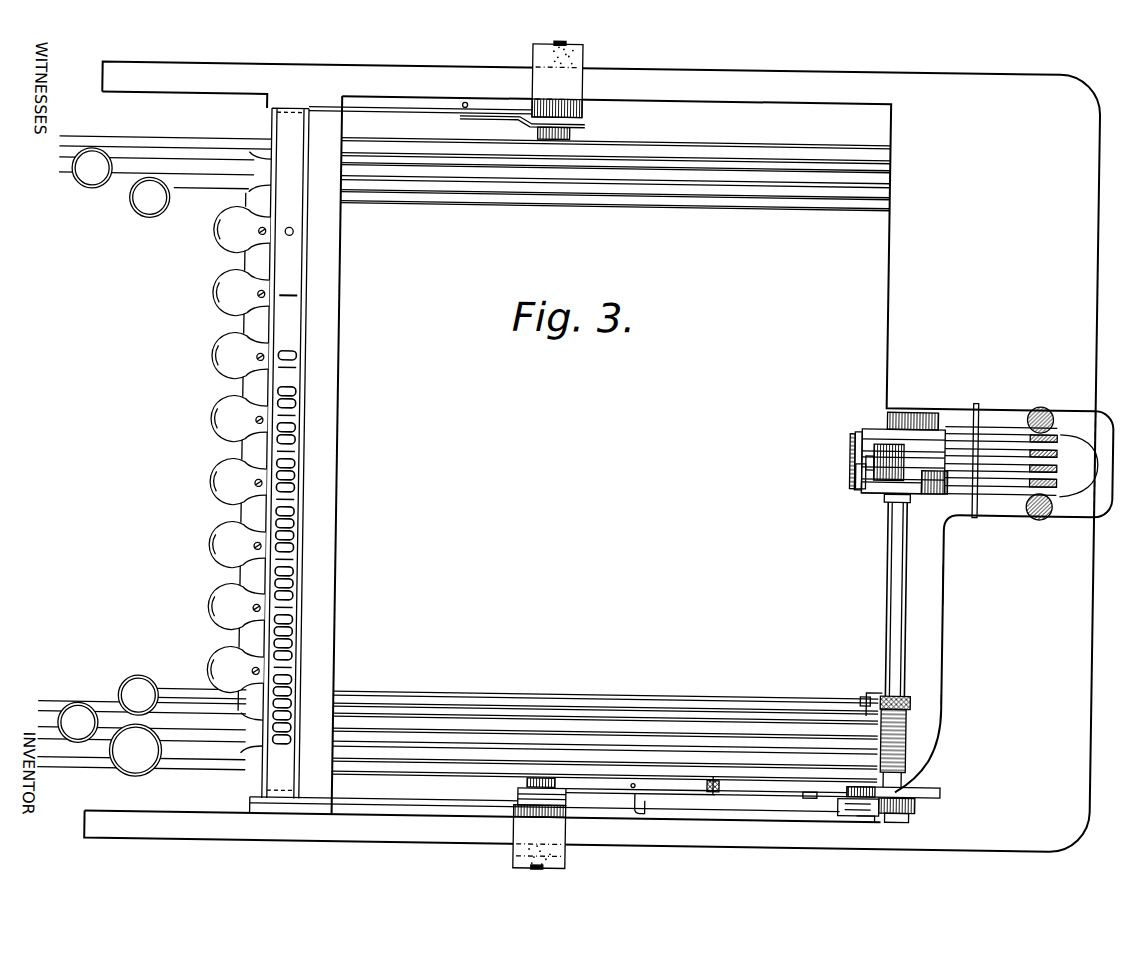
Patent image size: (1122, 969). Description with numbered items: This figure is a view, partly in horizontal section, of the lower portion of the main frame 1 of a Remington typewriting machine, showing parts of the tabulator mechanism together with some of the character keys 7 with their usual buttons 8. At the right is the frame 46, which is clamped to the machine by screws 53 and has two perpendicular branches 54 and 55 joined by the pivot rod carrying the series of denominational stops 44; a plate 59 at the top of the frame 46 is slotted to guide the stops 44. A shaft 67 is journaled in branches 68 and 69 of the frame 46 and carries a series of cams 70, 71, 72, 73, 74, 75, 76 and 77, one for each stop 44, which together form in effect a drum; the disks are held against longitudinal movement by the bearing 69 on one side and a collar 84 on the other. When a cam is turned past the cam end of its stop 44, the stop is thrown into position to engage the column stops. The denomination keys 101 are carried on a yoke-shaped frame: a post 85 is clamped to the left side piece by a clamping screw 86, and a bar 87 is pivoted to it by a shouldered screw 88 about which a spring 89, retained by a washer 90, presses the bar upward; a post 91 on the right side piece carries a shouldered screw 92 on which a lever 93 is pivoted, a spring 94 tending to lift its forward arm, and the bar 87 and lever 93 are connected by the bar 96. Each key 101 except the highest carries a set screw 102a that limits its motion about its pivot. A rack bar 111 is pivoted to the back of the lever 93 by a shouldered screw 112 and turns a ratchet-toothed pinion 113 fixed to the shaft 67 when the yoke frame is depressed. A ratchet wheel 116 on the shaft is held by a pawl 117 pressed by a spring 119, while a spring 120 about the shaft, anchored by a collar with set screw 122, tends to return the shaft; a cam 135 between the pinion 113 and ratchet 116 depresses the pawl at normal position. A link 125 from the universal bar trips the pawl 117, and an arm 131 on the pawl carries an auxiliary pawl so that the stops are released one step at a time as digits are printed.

The main frame 1 is at (601, 456).
The character keys 7 is at (453, 207).
The buttons 8 is at (148, 224).
The denominational stops 44 is at (1052, 480).
The frame 46 is at (945, 578).
The screws 53 is at (866, 694).
The perpendicular branch 54 is at (1040, 513).
The perpendicular branch 55 is at (1041, 410).
The plate 59 is at (976, 404).
The shaft 67 is at (894, 612).
The branch 68 is at (937, 695).
The branch 69 is at (913, 412).
The cam 70 is at (855, 430).
The cam 71 is at (850, 438).
The cam 72 is at (851, 455).
The cam 73 is at (880, 442).
The cam 74 is at (851, 455).
The cam 75 is at (922, 490).
The cam 76 is at (866, 486).
The cam 77 is at (856, 480).
The collar 84 is at (888, 498).
The post 85 is at (577, 90).
The clamping screw 86 is at (548, 45).
The bar 87 is at (410, 111).
The shouldered screw 88 is at (565, 135).
The spring 89 is at (462, 112).
The washer 90 is at (545, 128).
The post 91 is at (518, 808).
The shouldered screw 92 is at (531, 784).
The lever 93 is at (378, 815).
The spring 94 is at (634, 796).
The bar 96 is at (307, 323).
The denomination keys 101 is at (247, 368).
The set screw 102a is at (258, 240).
The rack bar 111 is at (866, 808).
The shouldered screw 112 is at (851, 815).
The pinion 113 is at (916, 810).
The ratchet wheel 116 is at (937, 777).
The pawl 117 is at (781, 797).
The spring 119 is at (648, 806).
The spring 120 is at (910, 712).
The set screw 122 is at (903, 690).
The link 125 is at (716, 794).
The arm 131 is at (816, 798).
The cam 135 is at (888, 820).